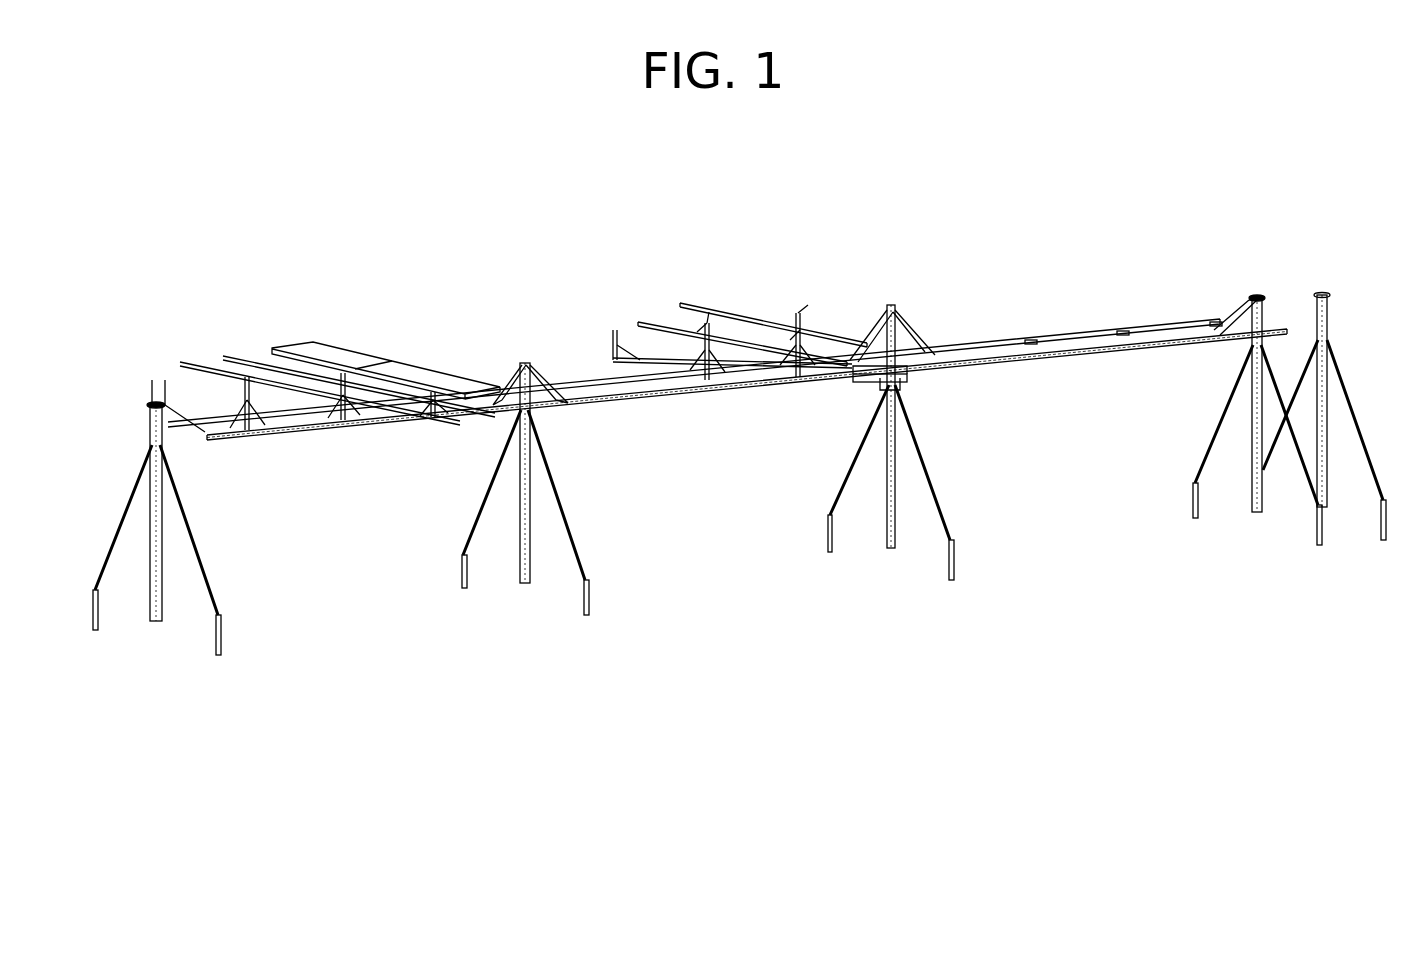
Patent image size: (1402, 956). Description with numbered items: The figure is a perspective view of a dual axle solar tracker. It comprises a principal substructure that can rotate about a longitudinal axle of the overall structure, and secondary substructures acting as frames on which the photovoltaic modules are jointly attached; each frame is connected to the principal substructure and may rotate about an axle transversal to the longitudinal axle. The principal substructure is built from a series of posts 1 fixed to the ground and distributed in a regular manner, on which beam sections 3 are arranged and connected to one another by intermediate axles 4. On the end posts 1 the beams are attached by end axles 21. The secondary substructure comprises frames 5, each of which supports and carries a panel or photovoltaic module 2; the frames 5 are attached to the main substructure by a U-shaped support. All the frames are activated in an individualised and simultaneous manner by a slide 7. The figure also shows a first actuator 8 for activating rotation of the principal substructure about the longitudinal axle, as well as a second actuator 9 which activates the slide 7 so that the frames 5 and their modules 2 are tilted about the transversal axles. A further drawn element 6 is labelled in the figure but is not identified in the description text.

The post 1 is at (160, 620).
The end axle 21 is at (155, 380).
The photovoltaic module 2 is at (320, 348).
The beam section 3 is at (1082, 332).
The intermediate axle 4 is at (525, 368).
The frame 5 is at (717, 292).
The cross beam 6 is at (807, 363).
The slide 7 is at (627, 400).
The first actuator 8 is at (904, 398).
The second actuator 9 is at (880, 382).